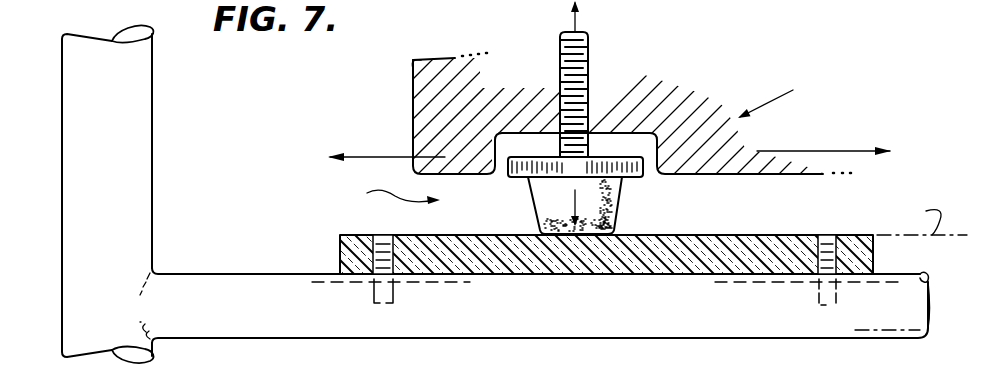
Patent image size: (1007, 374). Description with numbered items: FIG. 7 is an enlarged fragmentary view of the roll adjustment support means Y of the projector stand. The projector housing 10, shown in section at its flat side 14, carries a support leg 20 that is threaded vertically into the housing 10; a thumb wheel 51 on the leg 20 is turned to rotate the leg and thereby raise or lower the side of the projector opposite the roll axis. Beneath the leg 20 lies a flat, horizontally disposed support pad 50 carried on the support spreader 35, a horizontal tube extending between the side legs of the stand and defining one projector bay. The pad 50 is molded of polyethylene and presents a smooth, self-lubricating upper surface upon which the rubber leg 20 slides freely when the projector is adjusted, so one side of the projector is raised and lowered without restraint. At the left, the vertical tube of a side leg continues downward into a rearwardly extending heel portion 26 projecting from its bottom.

The heel portion 26 is at (140, 132).
The side 14 is at (413, 128).
The housing 10 is at (547, 81).
The thumb wheel 51 is at (529, 178).
The support leg 20 is at (612, 203).
The support pad 50 is at (757, 236).
The support spreader 35 is at (614, 328).